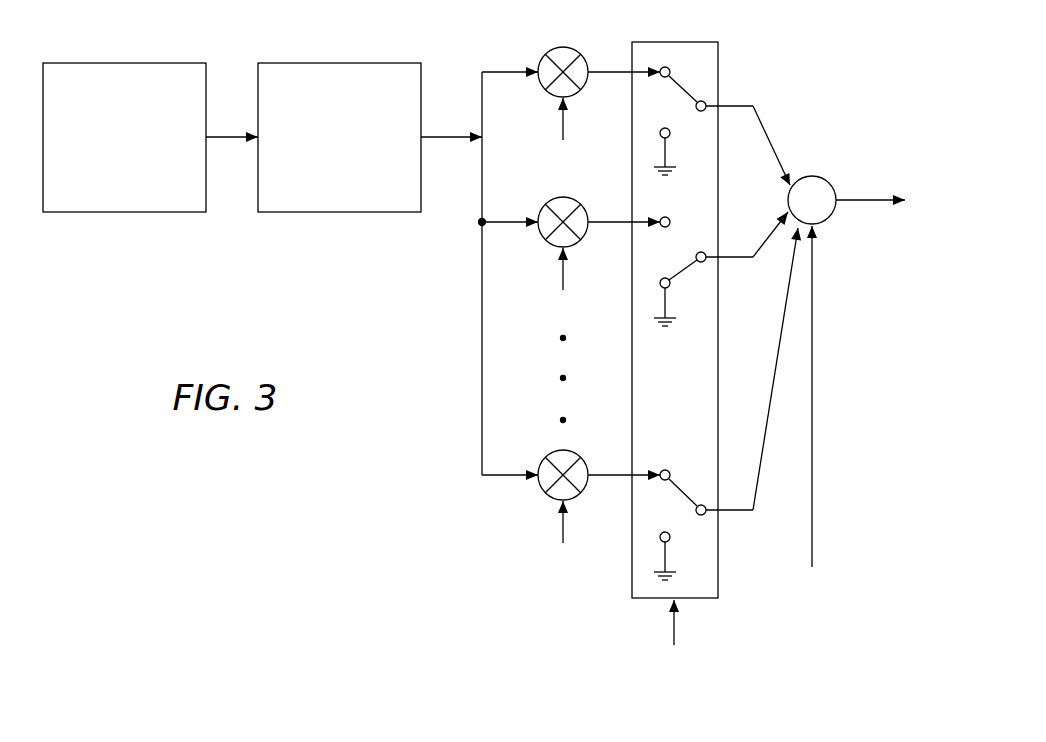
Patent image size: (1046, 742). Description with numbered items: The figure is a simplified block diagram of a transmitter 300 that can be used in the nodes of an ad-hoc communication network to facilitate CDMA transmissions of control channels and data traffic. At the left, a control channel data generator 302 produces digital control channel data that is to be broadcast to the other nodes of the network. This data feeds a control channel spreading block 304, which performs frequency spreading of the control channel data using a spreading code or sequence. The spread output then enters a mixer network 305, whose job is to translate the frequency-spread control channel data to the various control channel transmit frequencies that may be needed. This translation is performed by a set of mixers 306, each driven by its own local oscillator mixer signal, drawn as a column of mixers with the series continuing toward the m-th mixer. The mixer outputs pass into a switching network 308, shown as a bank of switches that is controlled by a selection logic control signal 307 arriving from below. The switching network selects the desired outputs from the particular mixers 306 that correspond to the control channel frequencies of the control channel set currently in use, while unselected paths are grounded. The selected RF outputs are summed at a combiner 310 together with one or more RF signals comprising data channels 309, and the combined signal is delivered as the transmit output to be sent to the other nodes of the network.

The transmitter 300 is at (384, 293).
The control channel data generator 302 is at (106, 201).
The control channel spreading block 304 is at (322, 201).
The mixer network 305 is at (507, 38).
The mixers 306 is at (567, 48).
The selection logic control signal 307 is at (672, 661).
The switching network 308 is at (652, 410).
The data channels 309 is at (811, 436).
The combiner 310 is at (819, 177).